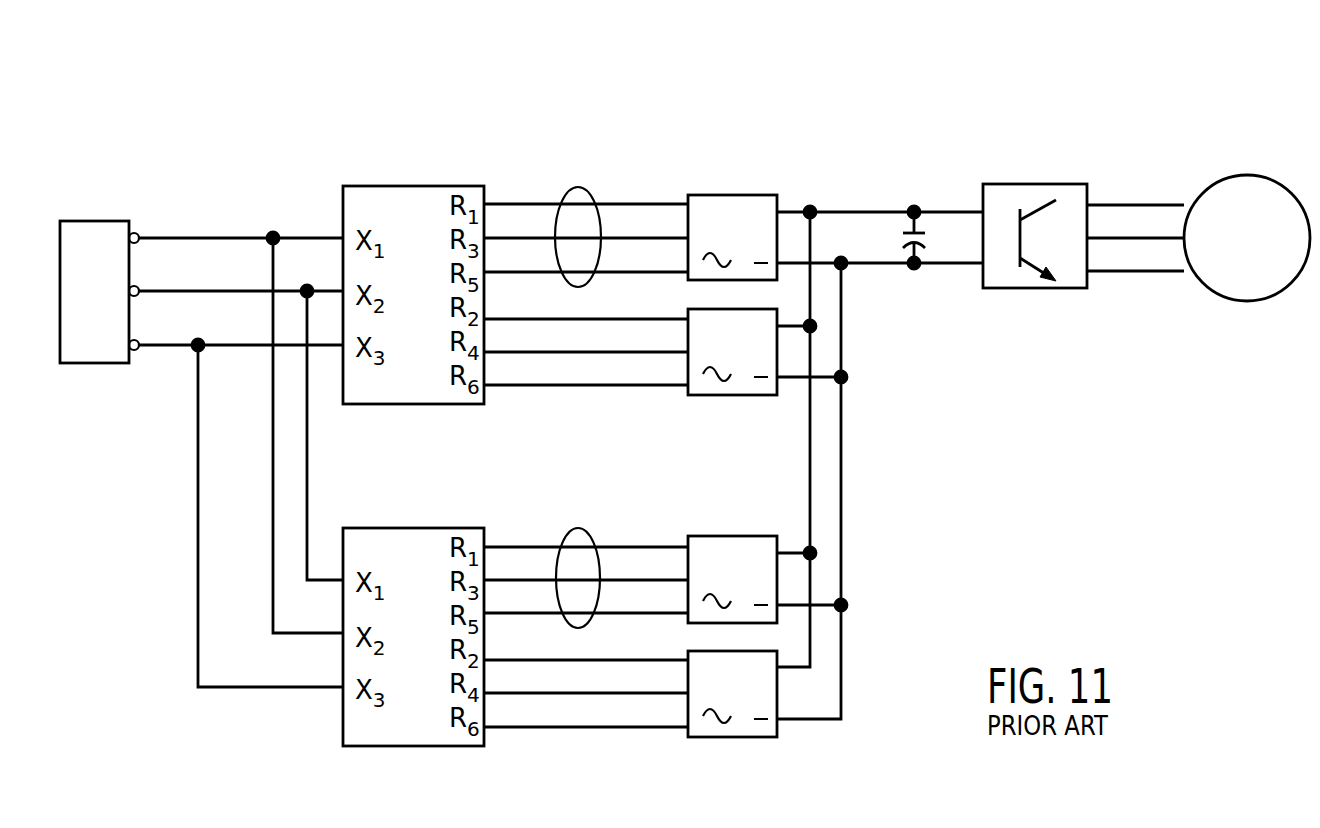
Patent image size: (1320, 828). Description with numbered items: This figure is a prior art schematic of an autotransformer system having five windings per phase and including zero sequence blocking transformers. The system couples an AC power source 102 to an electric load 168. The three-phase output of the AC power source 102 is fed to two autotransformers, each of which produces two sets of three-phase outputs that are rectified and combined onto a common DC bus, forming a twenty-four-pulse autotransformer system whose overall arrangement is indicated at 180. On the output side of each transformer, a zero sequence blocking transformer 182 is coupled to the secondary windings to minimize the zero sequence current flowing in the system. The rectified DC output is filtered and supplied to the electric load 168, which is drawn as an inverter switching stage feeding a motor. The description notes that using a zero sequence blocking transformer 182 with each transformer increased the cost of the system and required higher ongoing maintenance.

The AC power source 102 is at (76, 304).
The prior art motor drive system 180 is at (831, 85).
The zero sequence blocking transformer 182 is at (578, 187).
The electric load 168 is at (1287, 156).